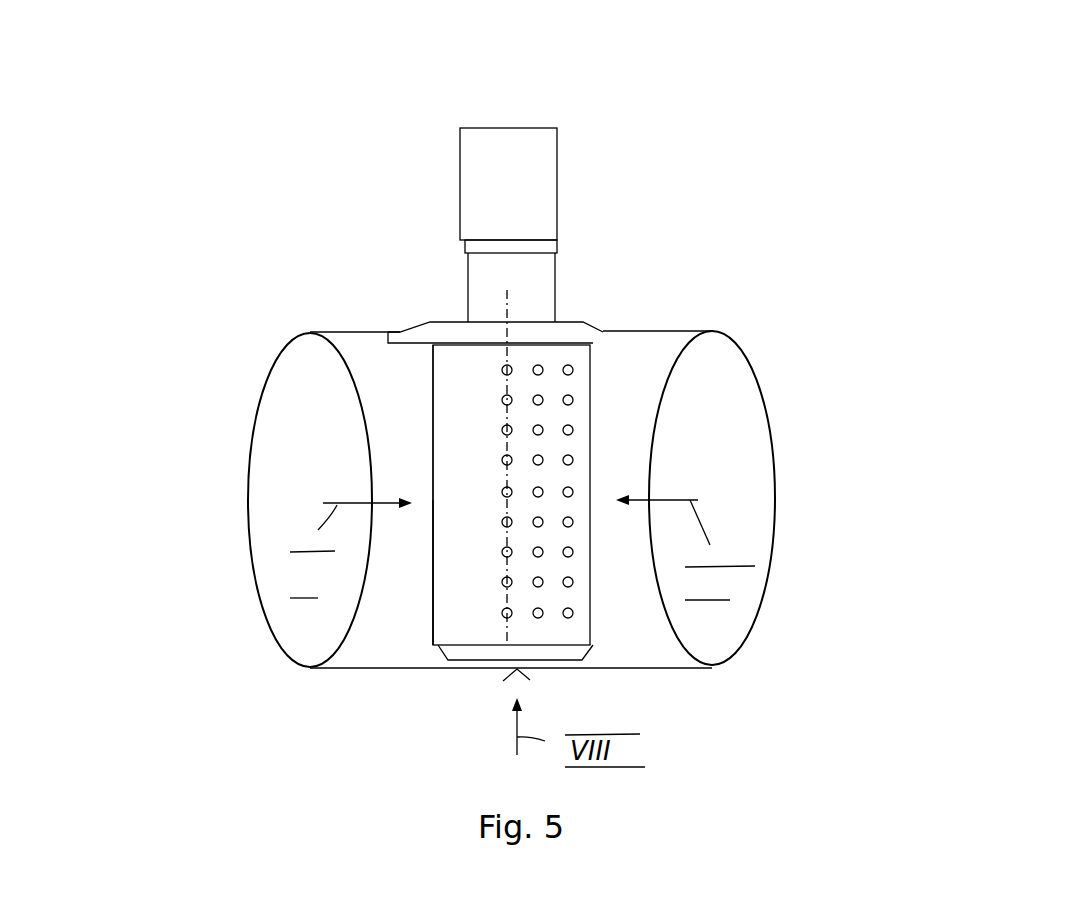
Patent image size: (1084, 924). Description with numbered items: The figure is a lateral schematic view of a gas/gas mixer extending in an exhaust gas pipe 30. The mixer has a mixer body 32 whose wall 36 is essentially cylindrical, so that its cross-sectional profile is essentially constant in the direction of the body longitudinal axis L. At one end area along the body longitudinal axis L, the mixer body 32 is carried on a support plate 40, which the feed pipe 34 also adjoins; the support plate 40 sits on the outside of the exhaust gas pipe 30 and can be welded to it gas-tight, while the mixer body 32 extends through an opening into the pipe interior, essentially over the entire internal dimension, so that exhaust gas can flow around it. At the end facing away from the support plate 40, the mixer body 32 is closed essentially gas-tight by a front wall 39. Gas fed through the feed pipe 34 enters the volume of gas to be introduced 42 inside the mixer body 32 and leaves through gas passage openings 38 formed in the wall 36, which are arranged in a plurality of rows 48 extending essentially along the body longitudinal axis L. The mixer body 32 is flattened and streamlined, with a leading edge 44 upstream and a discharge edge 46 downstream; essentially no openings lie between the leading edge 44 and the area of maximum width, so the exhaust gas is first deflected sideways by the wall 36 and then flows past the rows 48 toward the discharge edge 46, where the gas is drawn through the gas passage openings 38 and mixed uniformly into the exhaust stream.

The exhaust gas pipe 30 is at (287, 343).
The mixer body 32 is at (428, 610).
The feed pipe 34 is at (498, 128).
The wall 36 is at (462, 373).
The gas passage openings 38 is at (507, 618).
The front wall 39 is at (565, 668).
The support plate 40 is at (583, 322).
The volume of gas to be introduced 42 is at (455, 482).
The leading edge 44 is at (437, 553).
The discharge edge 46 is at (593, 463).
The rows 48 is at (590, 394).
The body longitudinal axis L is at (513, 292).